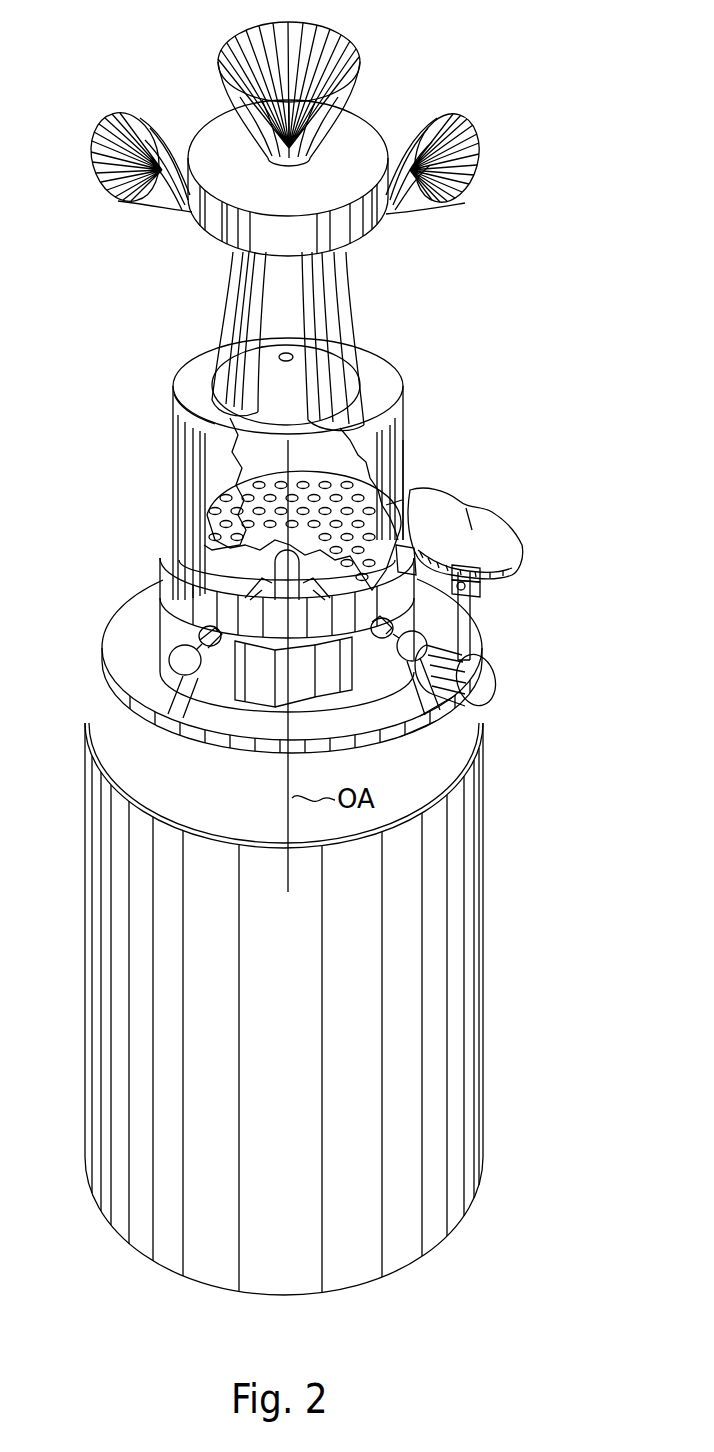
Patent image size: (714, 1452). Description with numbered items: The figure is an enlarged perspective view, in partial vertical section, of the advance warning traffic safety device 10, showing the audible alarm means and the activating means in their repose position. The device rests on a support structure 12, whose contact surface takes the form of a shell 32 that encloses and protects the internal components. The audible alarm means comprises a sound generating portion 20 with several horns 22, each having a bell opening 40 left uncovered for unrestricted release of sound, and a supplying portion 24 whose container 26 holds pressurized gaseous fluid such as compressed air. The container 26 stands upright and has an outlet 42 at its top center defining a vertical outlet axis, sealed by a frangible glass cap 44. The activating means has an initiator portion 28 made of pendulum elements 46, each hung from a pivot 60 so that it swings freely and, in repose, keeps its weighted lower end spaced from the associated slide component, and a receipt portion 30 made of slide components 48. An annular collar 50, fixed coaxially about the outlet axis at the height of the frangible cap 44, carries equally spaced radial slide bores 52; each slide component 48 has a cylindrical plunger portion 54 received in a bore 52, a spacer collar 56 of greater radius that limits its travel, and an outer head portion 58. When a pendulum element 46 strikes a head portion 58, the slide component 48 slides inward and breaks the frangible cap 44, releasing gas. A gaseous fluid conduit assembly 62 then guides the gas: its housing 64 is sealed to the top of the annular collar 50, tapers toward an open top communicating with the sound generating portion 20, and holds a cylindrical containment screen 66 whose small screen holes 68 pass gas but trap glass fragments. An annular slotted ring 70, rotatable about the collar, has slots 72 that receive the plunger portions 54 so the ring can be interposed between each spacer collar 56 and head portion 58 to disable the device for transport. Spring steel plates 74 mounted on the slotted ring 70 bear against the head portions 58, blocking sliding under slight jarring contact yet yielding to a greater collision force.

The traffic safety device 10 is at (388, 348).
The support structure 12 is at (500, 493).
The sound generating portion 20 is at (320, 139).
The horns 22 is at (470, 135).
The supplying portion 24 is at (486, 714).
The container 26 is at (453, 923).
The initiator portion 28 is at (514, 592).
The receipt portion 30 is at (433, 737).
The shell 32 is at (477, 517).
The bell opening 40 is at (460, 188).
The outlet 42 is at (178, 550).
The frangible cap 44 is at (202, 540).
The pendulum elements 46 is at (477, 642).
The slide component 48 is at (490, 590).
The annular collar 50 is at (158, 563).
The slide bores 52 is at (462, 533).
The cylindrical plunger portion 54 is at (398, 503).
The spacer collar 56 is at (460, 577).
The head portion 58 is at (496, 678).
The pivot 60 is at (483, 583).
The gaseous fluid conduit assembly 62 is at (287, 449).
The housing 64 is at (175, 393).
The containment screen 66 is at (412, 548).
The screen holes 68 is at (388, 455).
The slotted ring 70 is at (310, 689).
The slots 72 is at (156, 605).
The spring steel plates 74 is at (440, 720).